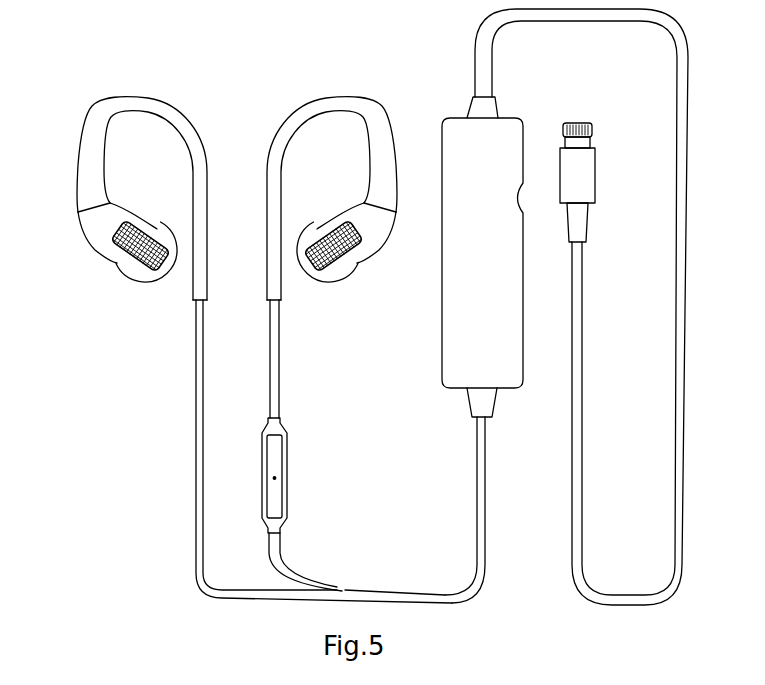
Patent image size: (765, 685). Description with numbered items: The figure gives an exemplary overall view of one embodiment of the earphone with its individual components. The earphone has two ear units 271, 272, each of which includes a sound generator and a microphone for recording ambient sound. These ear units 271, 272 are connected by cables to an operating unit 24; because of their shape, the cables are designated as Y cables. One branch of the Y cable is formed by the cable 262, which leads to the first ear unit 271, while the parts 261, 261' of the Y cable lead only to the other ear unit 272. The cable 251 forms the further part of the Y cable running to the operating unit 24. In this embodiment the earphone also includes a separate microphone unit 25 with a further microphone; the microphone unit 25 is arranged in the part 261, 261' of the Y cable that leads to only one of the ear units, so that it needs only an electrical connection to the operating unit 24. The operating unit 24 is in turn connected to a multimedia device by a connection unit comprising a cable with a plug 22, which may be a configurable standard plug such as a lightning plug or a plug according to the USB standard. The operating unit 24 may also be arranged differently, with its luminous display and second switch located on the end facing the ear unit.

The plug 22 is at (583, 193).
The operating unit 24 is at (443, 350).
The microphone unit 25 is at (287, 467).
The cable 251 is at (475, 478).
The cable 261 is at (324, 359).
The cable part 261' is at (341, 563).
The cable 262 is at (196, 387).
The ear unit 271 is at (92, 226).
The ear unit 272 is at (360, 213).